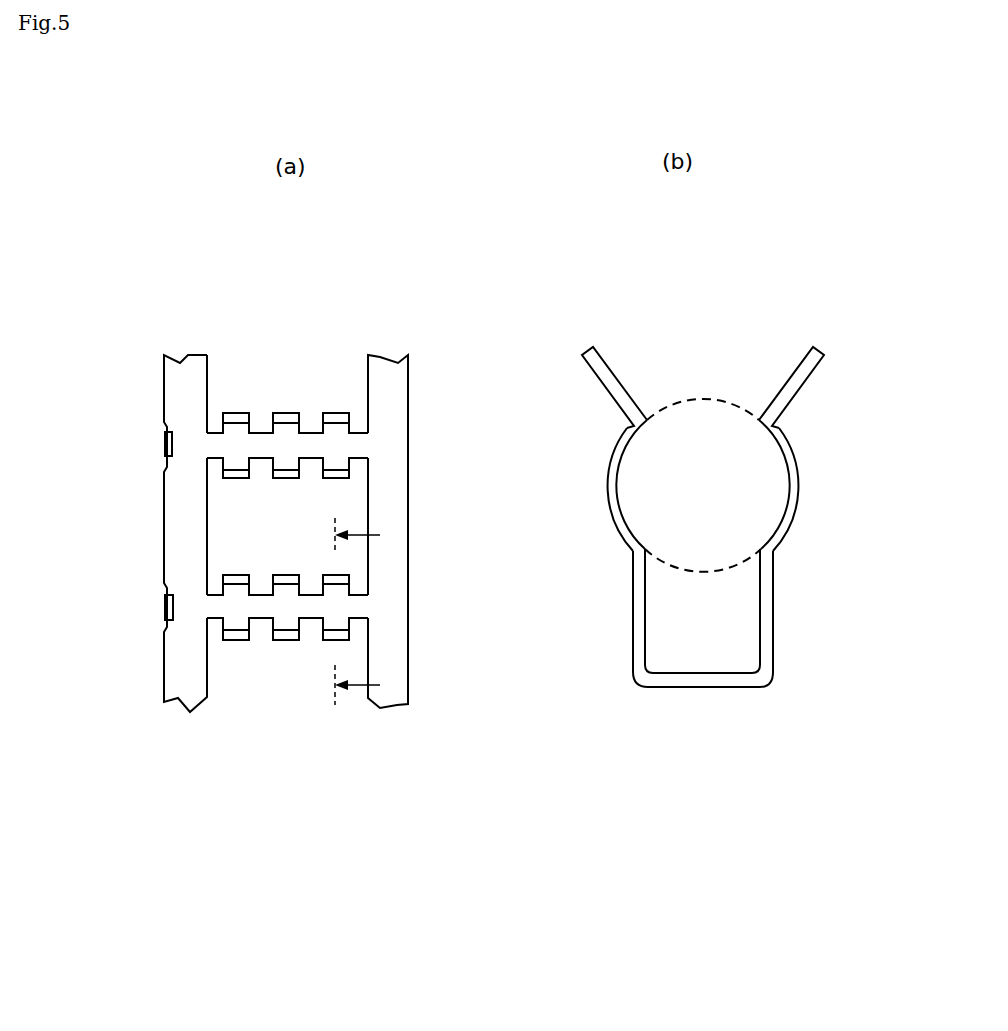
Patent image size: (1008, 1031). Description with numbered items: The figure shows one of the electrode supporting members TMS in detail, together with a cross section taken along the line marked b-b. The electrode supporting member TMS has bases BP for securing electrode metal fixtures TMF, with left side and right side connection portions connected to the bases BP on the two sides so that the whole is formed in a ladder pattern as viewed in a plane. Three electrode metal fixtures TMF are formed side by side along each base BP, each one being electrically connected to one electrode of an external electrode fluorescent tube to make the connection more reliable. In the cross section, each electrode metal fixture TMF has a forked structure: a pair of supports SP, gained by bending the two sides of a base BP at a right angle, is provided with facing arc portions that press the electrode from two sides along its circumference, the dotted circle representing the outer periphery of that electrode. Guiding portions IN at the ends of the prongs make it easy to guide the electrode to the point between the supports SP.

The electrode supporting member TMS is at (141, 742).
The electrode metal fixture TMF is at (240, 410).
The base BP is at (308, 433).
The inclined portion IN is at (612, 372).
The support SP is at (610, 508).